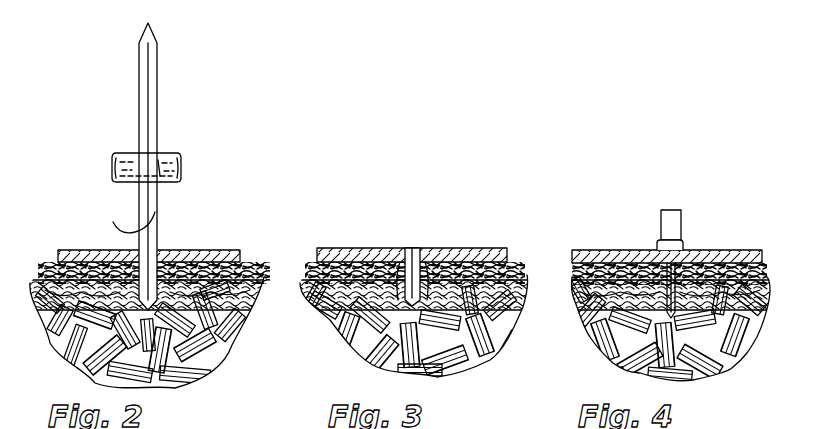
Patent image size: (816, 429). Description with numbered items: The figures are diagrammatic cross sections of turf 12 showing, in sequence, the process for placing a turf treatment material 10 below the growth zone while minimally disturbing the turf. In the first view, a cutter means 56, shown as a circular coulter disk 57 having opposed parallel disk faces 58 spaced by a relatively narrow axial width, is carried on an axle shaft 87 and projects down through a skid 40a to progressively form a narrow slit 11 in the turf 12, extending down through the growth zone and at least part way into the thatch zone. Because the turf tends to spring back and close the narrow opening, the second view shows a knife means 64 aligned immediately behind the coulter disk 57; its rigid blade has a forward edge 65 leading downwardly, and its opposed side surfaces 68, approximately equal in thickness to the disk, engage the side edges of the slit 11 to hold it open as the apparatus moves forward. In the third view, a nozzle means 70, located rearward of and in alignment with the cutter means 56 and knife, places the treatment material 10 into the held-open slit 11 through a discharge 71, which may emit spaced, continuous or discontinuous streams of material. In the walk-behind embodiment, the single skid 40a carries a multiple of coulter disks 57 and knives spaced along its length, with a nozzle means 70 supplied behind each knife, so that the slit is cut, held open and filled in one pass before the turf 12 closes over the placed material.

In FIG. 4, the turf treatment material 10 is at (690, 262).
In FIG. 2, the slit 11 is at (238, 322).
In FIG. 4, the slit 11 is at (634, 262).
In FIG. 2, the turf 12 is at (256, 263).
In FIG. 3, the turf 12 is at (507, 263).
In FIG. 4, the turf 12 is at (575, 299).
In FIG. 2, the skid 40a is at (214, 250).
In FIG. 2, the cutter means 56 is at (190, 171).
In FIG. 2, the coulter disk 57 is at (160, 205).
In FIG. 2, the disk faces 58 is at (115, 217).
In FIG. 3, the knife means 64 is at (425, 252).
In FIG. 3, the forward edge 65 is at (384, 262).
In FIG. 3, the side surfaces 68 is at (403, 252).
In FIG. 4, the nozzle means 70 is at (655, 210).
In FIG. 4, the discharge 71 is at (680, 240).
In FIG. 2, the axle shaft 87 is at (170, 158).